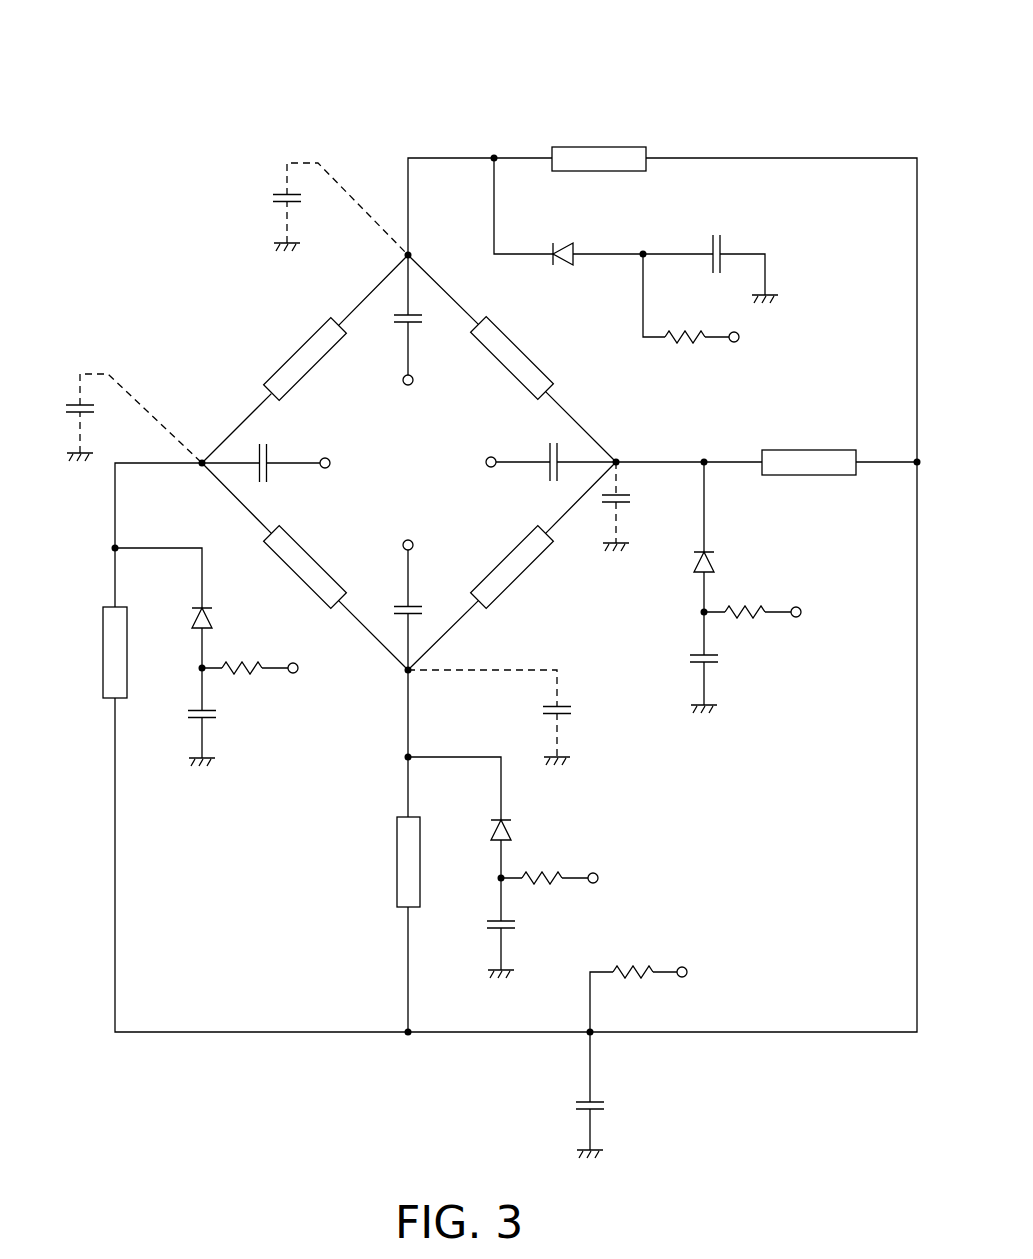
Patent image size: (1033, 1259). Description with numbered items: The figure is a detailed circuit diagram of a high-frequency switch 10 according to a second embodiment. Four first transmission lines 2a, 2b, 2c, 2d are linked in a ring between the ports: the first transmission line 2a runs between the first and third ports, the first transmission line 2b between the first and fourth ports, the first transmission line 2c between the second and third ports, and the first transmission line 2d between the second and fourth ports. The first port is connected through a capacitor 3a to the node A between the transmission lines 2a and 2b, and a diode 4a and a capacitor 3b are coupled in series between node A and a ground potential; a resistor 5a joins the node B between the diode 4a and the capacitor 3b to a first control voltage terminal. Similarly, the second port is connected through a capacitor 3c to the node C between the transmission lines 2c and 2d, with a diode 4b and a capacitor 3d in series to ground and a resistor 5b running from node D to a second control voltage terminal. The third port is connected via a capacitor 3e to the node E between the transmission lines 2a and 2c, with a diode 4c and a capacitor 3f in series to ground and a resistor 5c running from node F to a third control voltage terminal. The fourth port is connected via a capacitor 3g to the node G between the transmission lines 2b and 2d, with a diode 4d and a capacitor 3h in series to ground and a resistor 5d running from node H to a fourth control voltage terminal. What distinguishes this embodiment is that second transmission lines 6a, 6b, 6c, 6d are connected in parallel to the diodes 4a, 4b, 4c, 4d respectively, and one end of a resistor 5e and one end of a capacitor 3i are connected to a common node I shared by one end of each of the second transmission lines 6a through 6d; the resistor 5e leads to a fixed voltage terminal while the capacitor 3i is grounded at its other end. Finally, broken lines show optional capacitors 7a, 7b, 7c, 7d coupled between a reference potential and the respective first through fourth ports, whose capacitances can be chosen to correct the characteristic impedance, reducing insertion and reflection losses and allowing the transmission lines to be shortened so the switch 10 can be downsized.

The high-frequency switch 10 is at (232, 125).
The first transmission line 2a is at (305, 359).
The first transmission line 2b is at (305, 569).
The first transmission line 2c is at (512, 358).
The first transmission line 2d is at (512, 568).
The capacitor 3a is at (281, 451).
The capacitor 3b is at (219, 717).
The capacitor 3c is at (535, 453).
The capacitor 3d is at (689, 662).
The capacitor 3e is at (418, 333).
The capacitor 3f is at (710, 254).
The capacitor 3g is at (418, 590).
The capacitor 3h is at (517, 928).
The capacitor 3i is at (602, 1095).
The diode 4a is at (181, 608).
The diode 4b is at (721, 537).
The diode 4c is at (568, 211).
The diode 4d is at (477, 817).
The resistor 5a is at (272, 684).
The resistor 5b is at (775, 623).
The resistor 5c is at (714, 312).
The resistor 5d is at (571, 891).
The resistor 5e is at (662, 996).
The second transmission line 6a is at (96, 652).
The second transmission line 6b is at (809, 477).
The second transmission line 6c is at (599, 143).
The second transmission line 6d is at (390, 862).
The capacitor 7a is at (119, 418).
The capacitor 7b is at (633, 506).
The capacitor 7c is at (324, 209).
The capacitor 7d is at (508, 717).